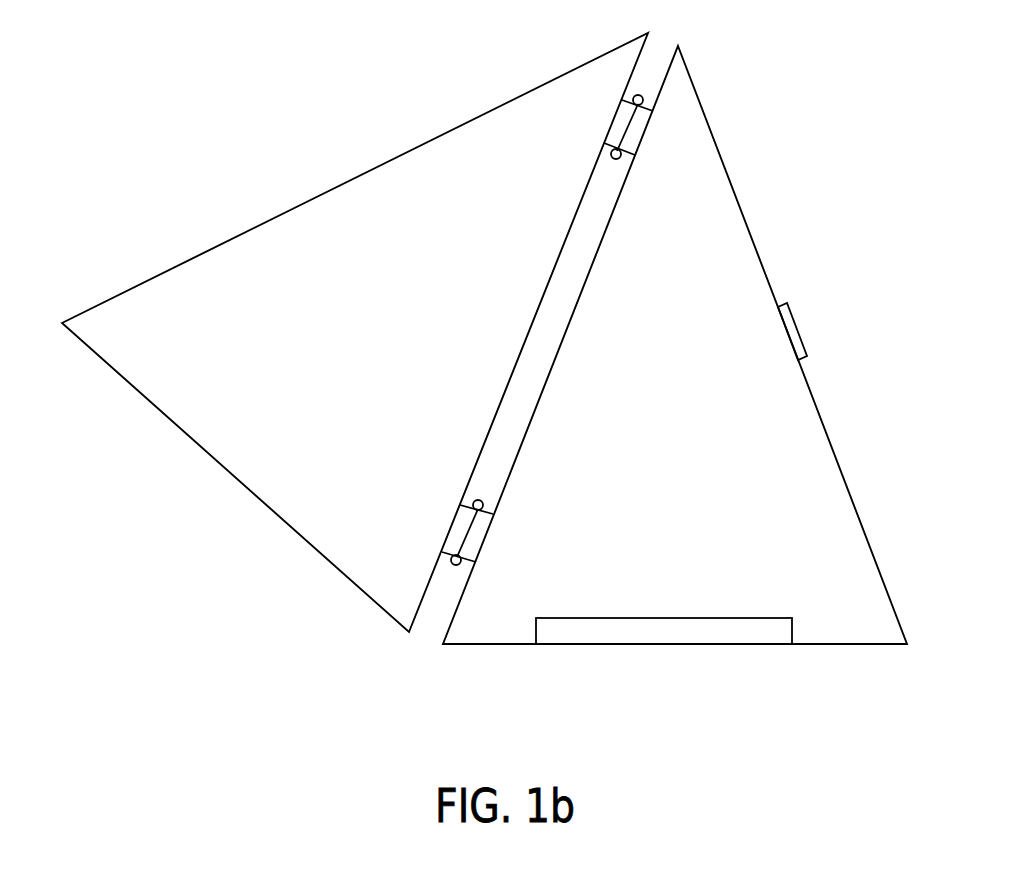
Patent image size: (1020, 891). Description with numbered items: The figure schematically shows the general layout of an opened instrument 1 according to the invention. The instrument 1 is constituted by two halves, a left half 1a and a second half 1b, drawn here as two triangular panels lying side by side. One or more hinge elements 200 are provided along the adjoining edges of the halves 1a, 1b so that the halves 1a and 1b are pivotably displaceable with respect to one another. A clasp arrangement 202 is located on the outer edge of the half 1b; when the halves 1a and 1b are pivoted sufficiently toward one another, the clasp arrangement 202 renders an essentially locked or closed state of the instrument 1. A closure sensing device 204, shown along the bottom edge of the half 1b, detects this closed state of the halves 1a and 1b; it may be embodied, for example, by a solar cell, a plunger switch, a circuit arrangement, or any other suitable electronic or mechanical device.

The instrument 1 is at (377, 139).
The left half 1a is at (586, 84).
The half 1b is at (713, 217).
The hinge element 200 is at (630, 125).
The clasp arrangement 202 is at (799, 333).
The closure sensing device 204 is at (783, 638).